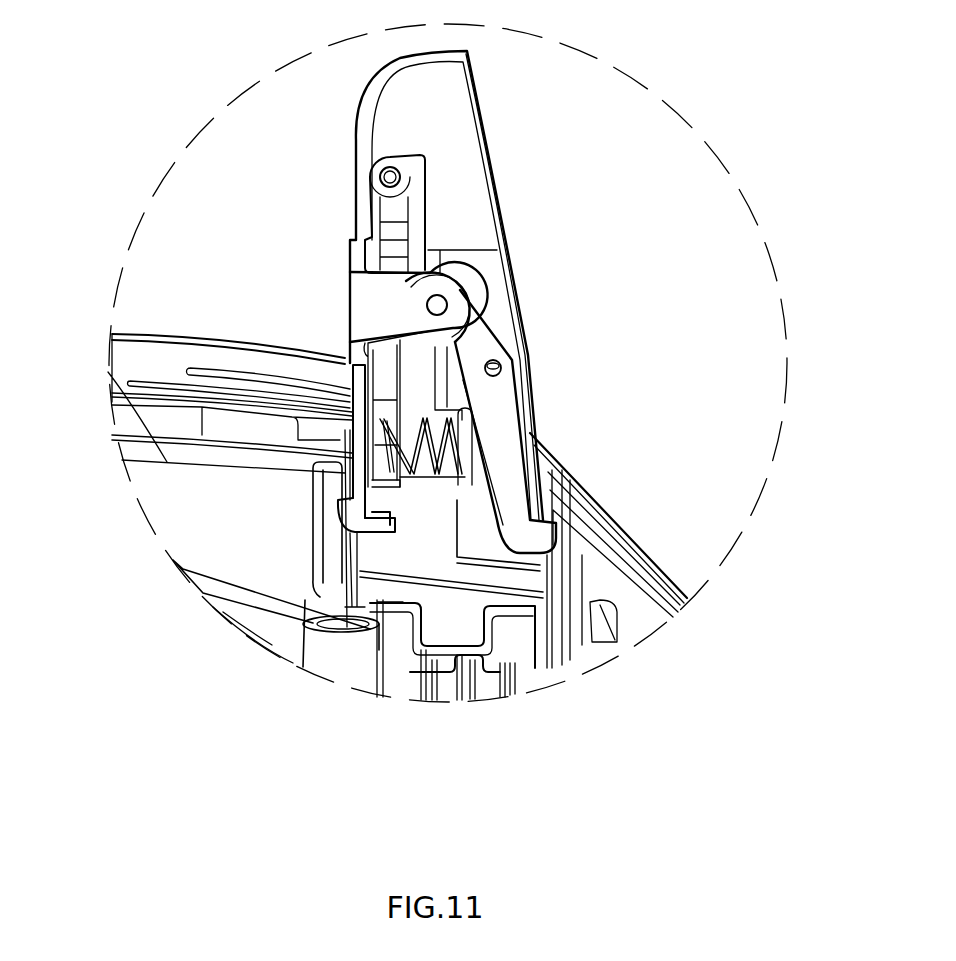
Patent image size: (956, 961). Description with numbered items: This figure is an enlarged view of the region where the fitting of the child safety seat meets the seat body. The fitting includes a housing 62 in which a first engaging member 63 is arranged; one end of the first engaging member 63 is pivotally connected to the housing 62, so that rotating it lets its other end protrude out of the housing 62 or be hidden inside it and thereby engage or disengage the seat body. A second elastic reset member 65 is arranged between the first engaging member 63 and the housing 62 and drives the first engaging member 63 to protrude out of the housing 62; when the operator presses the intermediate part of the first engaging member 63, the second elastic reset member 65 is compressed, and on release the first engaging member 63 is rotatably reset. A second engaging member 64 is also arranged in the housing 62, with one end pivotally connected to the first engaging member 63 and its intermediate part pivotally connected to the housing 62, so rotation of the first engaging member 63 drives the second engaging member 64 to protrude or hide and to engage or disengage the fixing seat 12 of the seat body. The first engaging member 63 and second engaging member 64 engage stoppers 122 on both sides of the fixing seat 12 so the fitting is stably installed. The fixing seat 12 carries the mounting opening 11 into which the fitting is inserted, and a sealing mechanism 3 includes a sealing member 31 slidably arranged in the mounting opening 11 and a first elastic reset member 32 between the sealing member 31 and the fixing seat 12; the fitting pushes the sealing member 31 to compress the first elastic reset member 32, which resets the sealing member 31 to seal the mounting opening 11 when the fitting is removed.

The housing 62 is at (503, 212).
The first engaging member 63 is at (372, 308).
The second engaging member 64 is at (500, 407).
The second elastic reset member 65 is at (418, 432).
The fixing seat 12 is at (347, 467).
The stopper 122 is at (340, 530).
The mounting opening 11 is at (620, 647).
The sealing mechanism 3 is at (345, 768).
The sealing member 31 is at (403, 600).
The first elastic reset member 32 is at (440, 648).